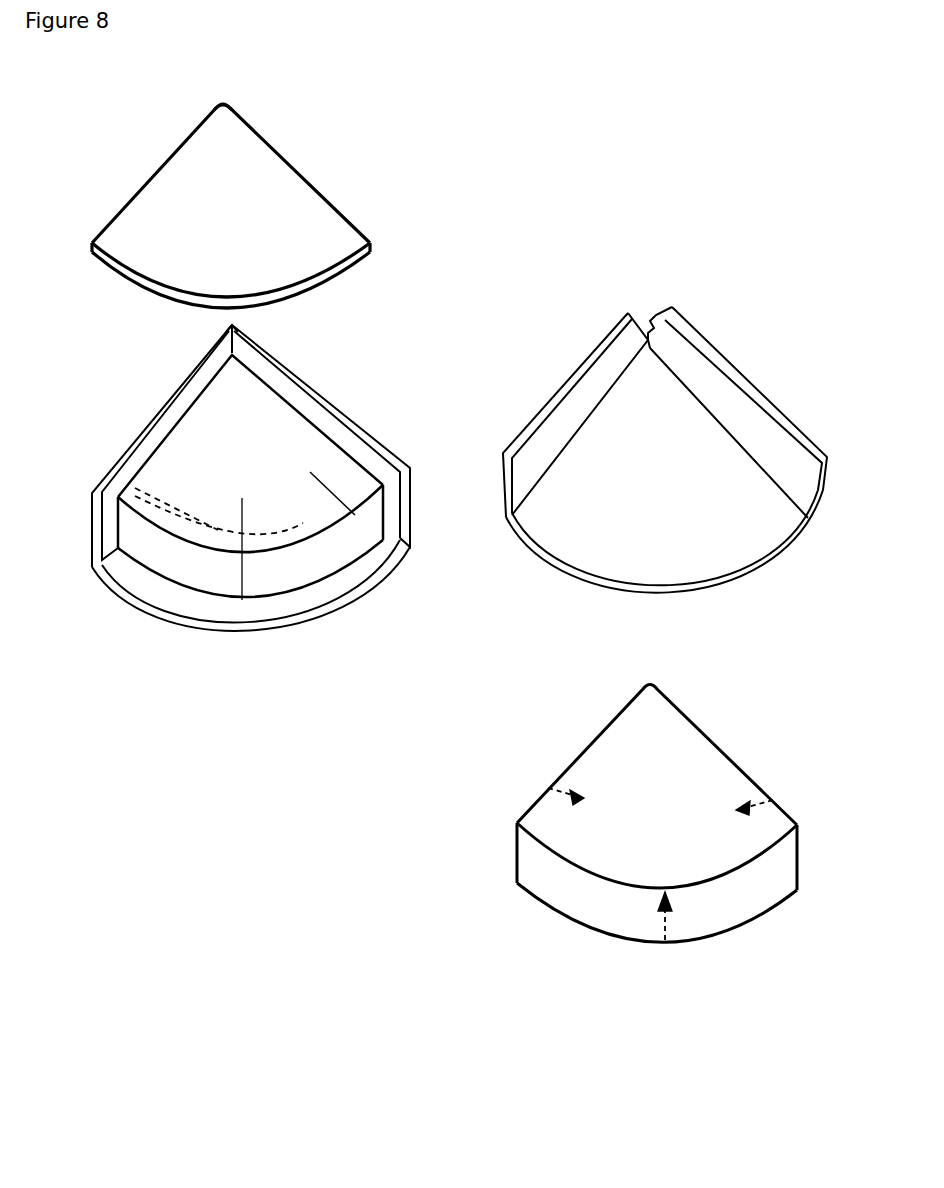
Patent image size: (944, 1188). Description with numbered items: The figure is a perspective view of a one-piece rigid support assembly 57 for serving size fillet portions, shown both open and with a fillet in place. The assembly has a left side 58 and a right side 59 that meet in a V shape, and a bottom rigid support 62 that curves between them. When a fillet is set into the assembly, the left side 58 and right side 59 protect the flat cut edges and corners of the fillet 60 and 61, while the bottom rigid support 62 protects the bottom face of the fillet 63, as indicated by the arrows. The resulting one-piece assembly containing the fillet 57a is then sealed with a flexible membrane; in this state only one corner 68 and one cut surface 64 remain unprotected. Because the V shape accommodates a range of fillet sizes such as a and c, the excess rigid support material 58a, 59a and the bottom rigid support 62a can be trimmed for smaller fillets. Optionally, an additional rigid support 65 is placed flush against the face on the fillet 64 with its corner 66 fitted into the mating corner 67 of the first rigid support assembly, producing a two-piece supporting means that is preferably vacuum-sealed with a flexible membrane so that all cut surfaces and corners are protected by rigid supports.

The one-piece rigid support assembly 57 is at (666, 439).
The one-piece assembly containing the fillet 57a is at (240, 468).
The left side 58 is at (570, 417).
The excess rigid support material of left side 58a is at (118, 487).
The right side 59 is at (748, 433).
The excess rigid support material of right side 59a is at (378, 473).
The flat cut edge and corners of the fillet 60 is at (548, 788).
The flat cut edge and corners of the fillet 61 is at (773, 800).
The bottom rigid support 62 is at (583, 540).
The bottom rigid support of the assembly containing the fillet 62a is at (147, 582).
The bottom face of the fillet 63 is at (665, 940).
The cut surface of the fillet 64 is at (457, 648).
The additional rigid support 65 is at (283, 120).
The corner of the second rigid support 66 is at (228, 93).
The mating corner of the first rigid support assembly 67 is at (228, 349).
The unprotected corner 68 is at (242, 600).
The fillet size a is at (172, 498).
The fillet size c is at (219, 508).